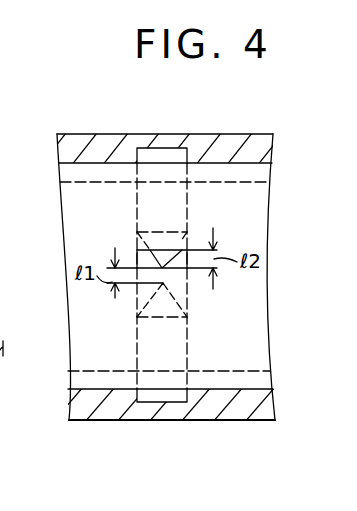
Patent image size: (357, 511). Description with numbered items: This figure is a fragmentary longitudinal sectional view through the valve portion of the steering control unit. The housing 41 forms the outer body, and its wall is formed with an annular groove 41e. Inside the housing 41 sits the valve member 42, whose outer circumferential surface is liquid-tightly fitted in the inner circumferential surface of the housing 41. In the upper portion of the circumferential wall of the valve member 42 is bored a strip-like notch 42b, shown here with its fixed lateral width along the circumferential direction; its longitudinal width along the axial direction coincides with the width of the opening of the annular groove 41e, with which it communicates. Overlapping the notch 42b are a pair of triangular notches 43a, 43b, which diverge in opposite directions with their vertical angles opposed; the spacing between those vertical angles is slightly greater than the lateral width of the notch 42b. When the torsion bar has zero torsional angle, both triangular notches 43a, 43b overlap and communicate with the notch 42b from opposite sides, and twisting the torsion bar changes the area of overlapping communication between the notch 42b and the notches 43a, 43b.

The housing 41 is at (162, 134).
The annular groove 41e is at (168, 402).
The valve member 42 is at (245, 206).
The strip-like notch 42b is at (186, 261).
The triangular notch 43a is at (158, 233).
The triangular notch 43b is at (165, 318).